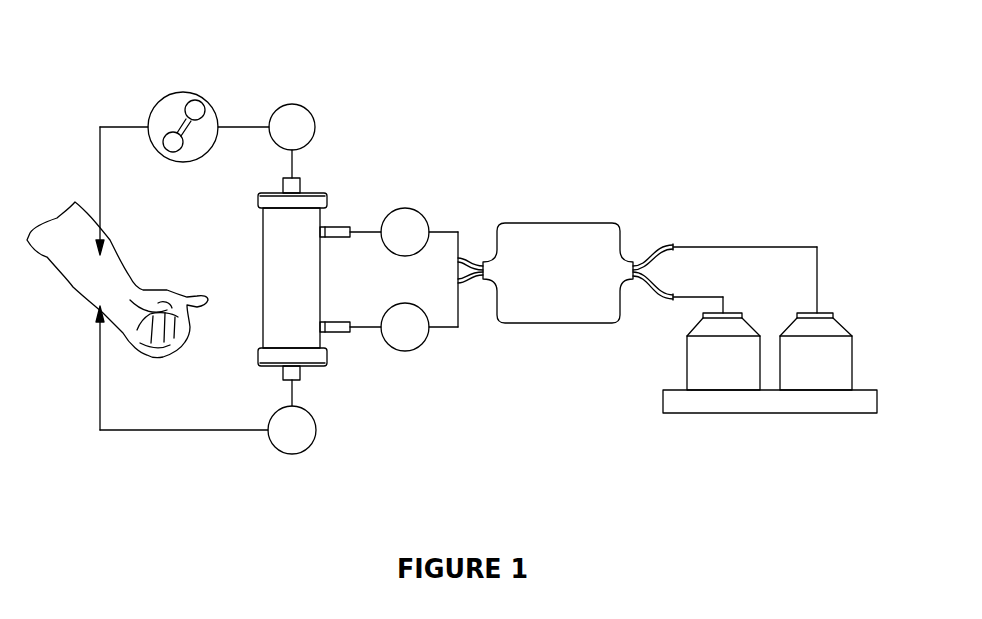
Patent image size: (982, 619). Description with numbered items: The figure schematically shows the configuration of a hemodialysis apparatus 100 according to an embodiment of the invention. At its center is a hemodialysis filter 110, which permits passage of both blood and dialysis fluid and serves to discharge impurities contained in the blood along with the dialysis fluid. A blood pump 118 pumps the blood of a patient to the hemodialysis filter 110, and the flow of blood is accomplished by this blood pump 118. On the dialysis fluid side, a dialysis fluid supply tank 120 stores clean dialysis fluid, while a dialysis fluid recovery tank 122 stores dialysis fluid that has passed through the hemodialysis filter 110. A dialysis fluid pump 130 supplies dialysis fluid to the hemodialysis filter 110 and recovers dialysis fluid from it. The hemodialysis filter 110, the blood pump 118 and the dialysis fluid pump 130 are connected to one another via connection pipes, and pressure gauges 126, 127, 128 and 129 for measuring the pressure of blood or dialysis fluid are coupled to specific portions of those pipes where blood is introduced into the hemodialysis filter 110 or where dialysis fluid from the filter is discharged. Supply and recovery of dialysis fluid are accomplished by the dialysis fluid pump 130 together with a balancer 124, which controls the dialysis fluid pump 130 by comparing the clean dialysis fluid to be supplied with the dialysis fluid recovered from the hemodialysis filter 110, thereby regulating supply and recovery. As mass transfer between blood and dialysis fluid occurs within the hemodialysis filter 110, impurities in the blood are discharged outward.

The hemodialysis apparatus 100 is at (740, 78).
The hemodialysis filter 110 is at (330, 176).
The blood pump 118 is at (183, 92).
The dialysis fluid supply tank 120 is at (720, 377).
The dialysis fluid recovery tank 122 is at (820, 377).
The balancer 124 is at (768, 402).
The pressure gauge 126 is at (292, 103).
The pressure gauge 127 is at (316, 428).
The pressure gauge 128 is at (405, 351).
The pressure gauge 129 is at (407, 208).
The dialysis fluid pump 130 is at (560, 223).